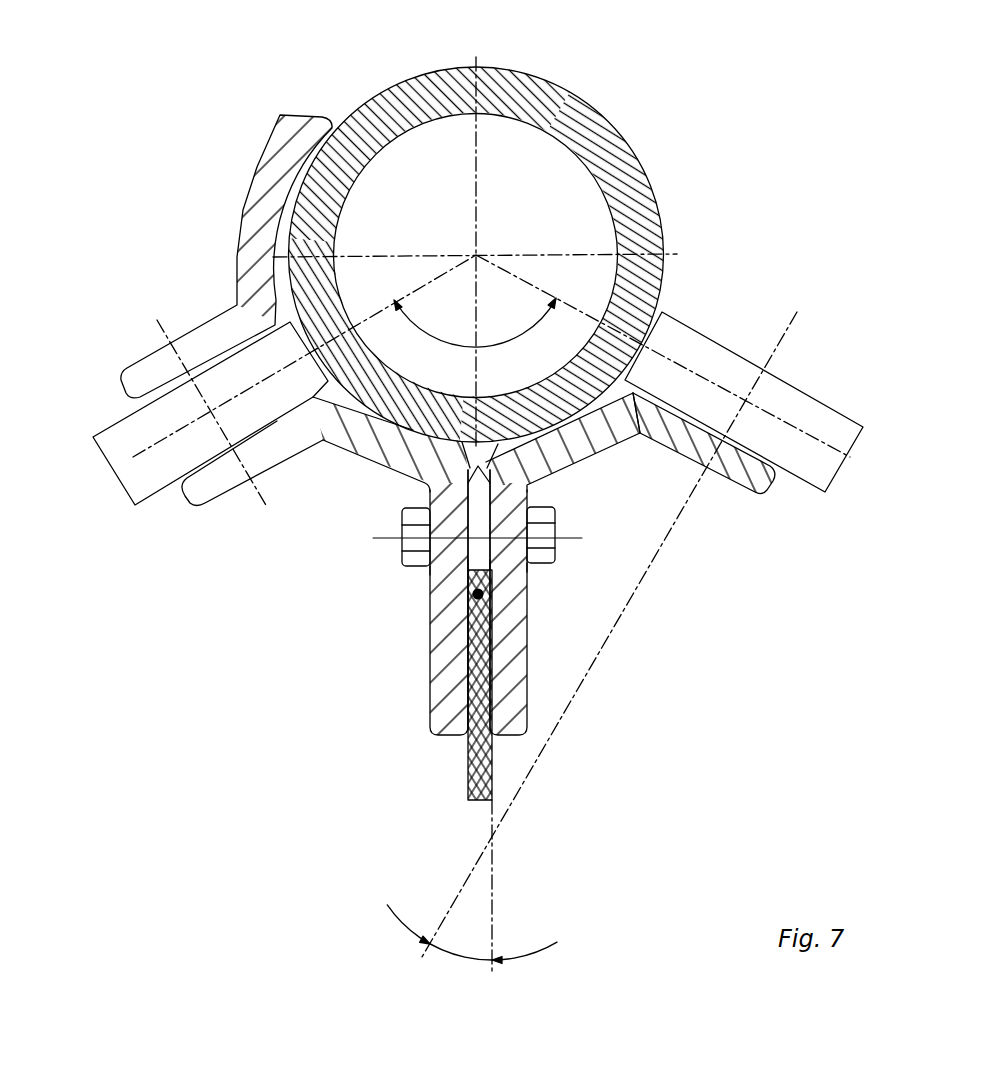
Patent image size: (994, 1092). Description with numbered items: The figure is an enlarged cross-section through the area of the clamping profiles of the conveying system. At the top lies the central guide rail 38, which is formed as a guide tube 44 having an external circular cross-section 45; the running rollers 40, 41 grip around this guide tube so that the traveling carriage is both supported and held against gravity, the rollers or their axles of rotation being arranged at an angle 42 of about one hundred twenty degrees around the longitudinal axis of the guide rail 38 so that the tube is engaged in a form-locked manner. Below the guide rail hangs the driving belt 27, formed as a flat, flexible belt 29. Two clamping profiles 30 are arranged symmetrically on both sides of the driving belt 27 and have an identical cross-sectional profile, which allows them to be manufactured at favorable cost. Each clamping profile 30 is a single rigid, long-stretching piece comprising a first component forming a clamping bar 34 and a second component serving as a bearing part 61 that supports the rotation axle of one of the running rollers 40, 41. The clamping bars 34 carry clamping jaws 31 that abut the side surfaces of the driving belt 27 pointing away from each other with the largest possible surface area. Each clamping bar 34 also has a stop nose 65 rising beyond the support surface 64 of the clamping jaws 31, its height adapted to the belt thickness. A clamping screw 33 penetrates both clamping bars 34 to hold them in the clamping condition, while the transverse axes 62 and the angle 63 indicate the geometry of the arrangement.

The driving belt 27 is at (460, 754).
The belt 29 is at (492, 762).
The clamping profile 30 is at (545, 612).
The clamping jaw 31 is at (470, 660).
The clamping screw 33 is at (547, 530).
The clamping bar 34 is at (438, 585).
The central guide rail 38 is at (632, 168).
The running roller 40 is at (118, 462).
The running roller 41 is at (833, 455).
The angle 42 is at (503, 340).
The guide tube 44 is at (565, 108).
The external circular cross-section 45 is at (399, 74).
The bearing part 61 is at (742, 480).
The transverse axis 62 is at (157, 321).
The angle 63 is at (458, 958).
The support surface 64 is at (500, 688).
The stop nose 65 is at (530, 468).